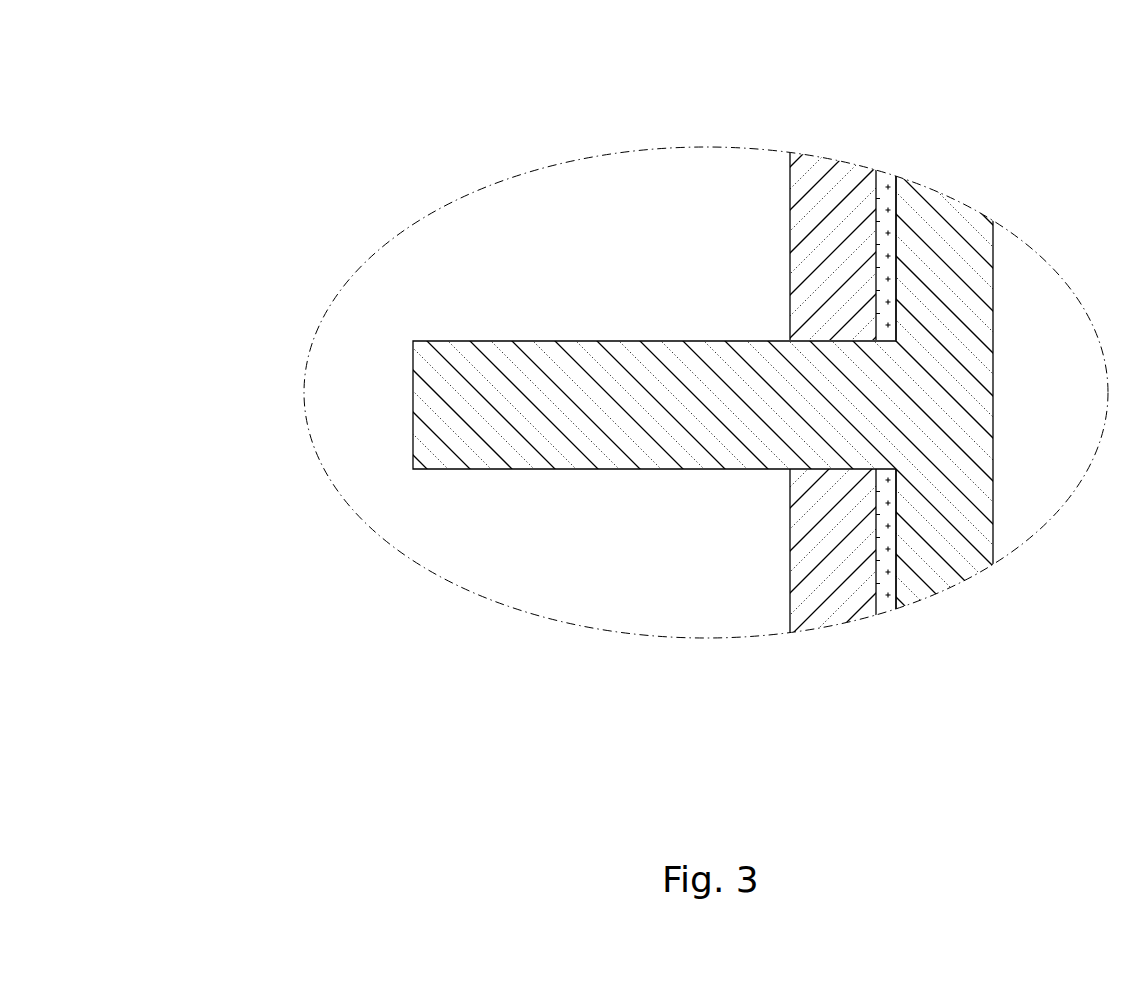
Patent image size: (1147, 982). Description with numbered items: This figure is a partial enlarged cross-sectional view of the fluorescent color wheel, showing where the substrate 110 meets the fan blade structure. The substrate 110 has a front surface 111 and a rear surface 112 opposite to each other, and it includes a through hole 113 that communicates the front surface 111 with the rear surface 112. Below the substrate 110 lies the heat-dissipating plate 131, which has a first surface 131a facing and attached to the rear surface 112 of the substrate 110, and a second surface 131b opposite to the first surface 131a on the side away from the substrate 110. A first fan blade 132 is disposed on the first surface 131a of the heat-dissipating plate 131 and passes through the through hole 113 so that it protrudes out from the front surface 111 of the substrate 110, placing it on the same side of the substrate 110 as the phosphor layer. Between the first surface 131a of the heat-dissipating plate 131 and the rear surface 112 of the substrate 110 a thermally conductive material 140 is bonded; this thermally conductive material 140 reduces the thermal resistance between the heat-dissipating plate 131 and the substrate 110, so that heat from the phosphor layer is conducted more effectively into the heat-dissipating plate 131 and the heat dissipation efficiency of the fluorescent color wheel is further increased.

The substrate 110 is at (835, 177).
The front surface 111 is at (789, 613).
The rear surface 112 is at (878, 600).
The through holes 113 is at (790, 470).
The heat-dissipating plate 131 is at (949, 207).
The first surface 131a is at (900, 608).
The second surface 131b is at (993, 540).
The first fan blades 132 is at (430, 385).
The thermally conductive material 140 is at (887, 175).